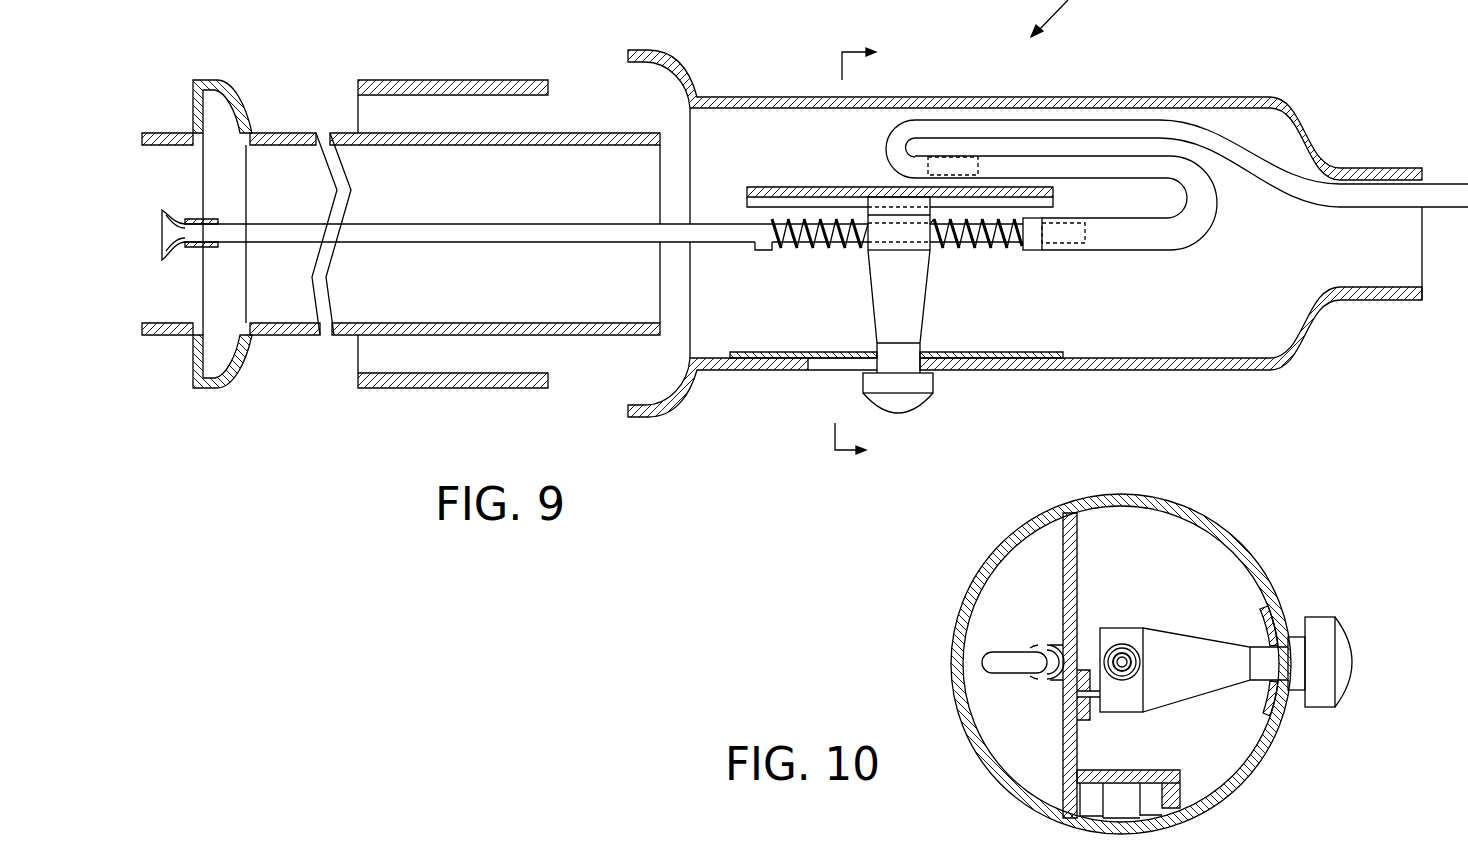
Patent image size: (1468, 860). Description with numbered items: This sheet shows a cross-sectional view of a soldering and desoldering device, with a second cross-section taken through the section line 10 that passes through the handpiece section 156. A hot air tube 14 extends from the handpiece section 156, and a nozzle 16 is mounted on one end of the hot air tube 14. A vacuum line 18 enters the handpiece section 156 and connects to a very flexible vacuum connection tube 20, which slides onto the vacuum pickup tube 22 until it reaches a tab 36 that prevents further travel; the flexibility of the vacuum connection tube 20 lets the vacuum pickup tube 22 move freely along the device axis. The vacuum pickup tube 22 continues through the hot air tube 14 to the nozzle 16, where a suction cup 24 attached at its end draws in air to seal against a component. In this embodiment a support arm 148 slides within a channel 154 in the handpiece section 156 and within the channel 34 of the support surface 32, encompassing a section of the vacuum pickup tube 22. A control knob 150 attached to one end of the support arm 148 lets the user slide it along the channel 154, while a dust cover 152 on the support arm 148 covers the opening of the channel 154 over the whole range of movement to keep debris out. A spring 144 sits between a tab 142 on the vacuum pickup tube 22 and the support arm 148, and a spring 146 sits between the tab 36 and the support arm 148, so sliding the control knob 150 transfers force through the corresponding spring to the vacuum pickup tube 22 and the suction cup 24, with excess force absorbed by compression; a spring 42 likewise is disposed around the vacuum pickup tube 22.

In FIG. 9, the device 10 is at (869, 253).
In FIG. 9, the hot air tube 14 is at (343, 132).
In FIG. 9, the nozzle 16 is at (170, 132).
In FIG. 9, the vacuum line 18 is at (1277, 162).
In FIG. 10, the vacuum line 18 is at (982, 662).
In FIG. 9, the vacuum connection tube 20 is at (1215, 226).
In FIG. 10, the vacuum connection tube 20 is at (1045, 682).
In FIG. 9, the vacuum pickup tube 22 is at (410, 244).
In FIG. 10, the vacuum pickup tube 22 is at (1131, 652).
In FIG. 9, the suction cup 24 is at (164, 212).
In FIG. 9, the support surface 32 is at (820, 187).
In FIG. 10, the support surface 32 is at (1062, 550).
In FIG. 9, the channel 34 is at (762, 200).
In FIG. 10, the channel 34 is at (1090, 704).
In FIG. 9, the tab 36 is at (1033, 250).
In FIG. 9, the spring 42 is at (890, 218).
In FIG. 9, the tab 142 is at (755, 250).
In FIG. 9, the spring 144 is at (820, 249).
In FIG. 10, the spring 144 is at (1113, 645).
In FIG. 9, the spring 146 is at (985, 250).
In FIG. 9, the support arm 148 is at (925, 303).
In FIG. 10, the support arm 148 is at (1196, 700).
In FIG. 9, the control knob 150 is at (933, 395).
In FIG. 10, the control knob 150 is at (1345, 700).
In FIG. 9, the dust cover 152 is at (1033, 354).
In FIG. 10, the dust cover 152 is at (1263, 628).
In FIG. 9, the channel 154 is at (838, 368).
In FIG. 9, the handpiece section 156 is at (1135, 97).
In FIG. 10, the handpiece section 156 is at (1230, 528).